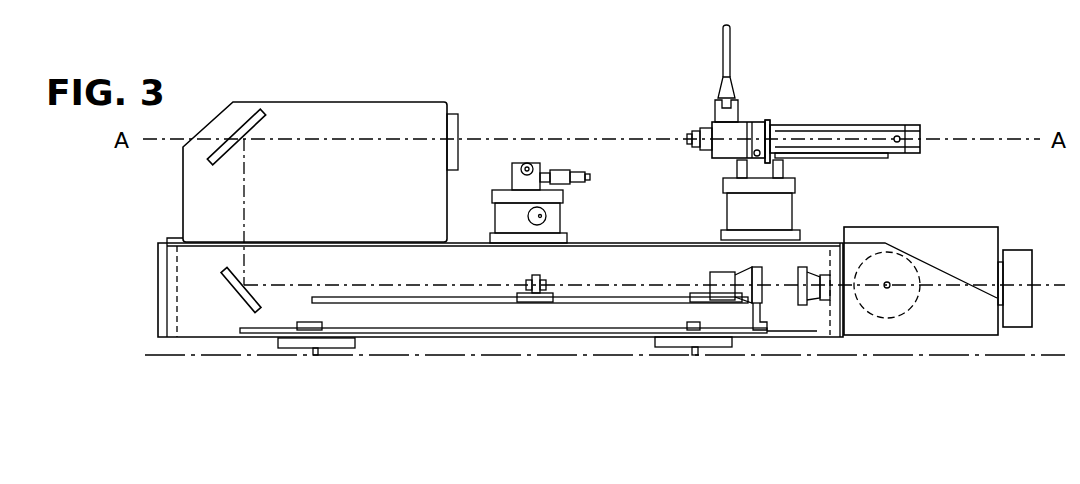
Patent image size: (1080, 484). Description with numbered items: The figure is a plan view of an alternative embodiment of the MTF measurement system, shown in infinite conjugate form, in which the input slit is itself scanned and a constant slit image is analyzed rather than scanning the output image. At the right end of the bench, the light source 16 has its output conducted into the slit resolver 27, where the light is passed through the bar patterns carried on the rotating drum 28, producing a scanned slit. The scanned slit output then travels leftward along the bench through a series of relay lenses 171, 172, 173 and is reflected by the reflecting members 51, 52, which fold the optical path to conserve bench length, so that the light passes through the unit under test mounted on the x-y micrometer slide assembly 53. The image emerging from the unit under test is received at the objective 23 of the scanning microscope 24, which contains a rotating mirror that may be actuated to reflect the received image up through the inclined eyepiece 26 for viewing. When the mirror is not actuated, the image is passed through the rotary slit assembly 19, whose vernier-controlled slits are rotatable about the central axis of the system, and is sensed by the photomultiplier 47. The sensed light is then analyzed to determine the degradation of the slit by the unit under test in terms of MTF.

The light source 16 is at (1027, 250).
The rotary slit assembly 19 is at (757, 122).
The relay lens 23 is at (690, 130).
The scanning microscope 24 is at (723, 162).
The inclined eyepiece 26 is at (723, 55).
The slit resolver 27 is at (937, 227).
The rotary drum 28 is at (919, 296).
The photomultiplier 47 is at (875, 125).
The reflecting member 51 is at (231, 289).
The reflecting member 52 is at (250, 117).
The x-y micrometer slide assembly 53 is at (560, 218).
The relay lens 171 is at (802, 306).
The relay lens 172 is at (763, 302).
The relay lens 173 is at (546, 285).